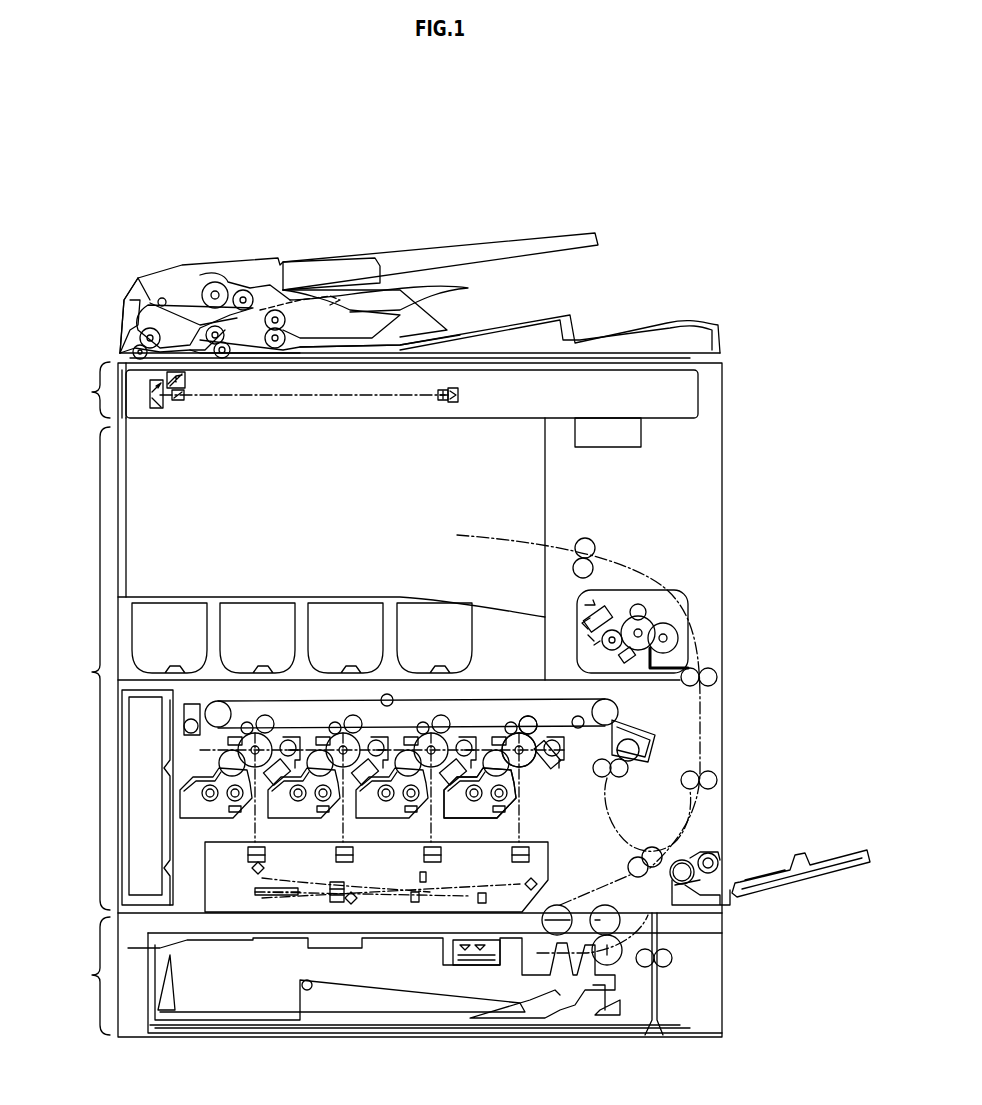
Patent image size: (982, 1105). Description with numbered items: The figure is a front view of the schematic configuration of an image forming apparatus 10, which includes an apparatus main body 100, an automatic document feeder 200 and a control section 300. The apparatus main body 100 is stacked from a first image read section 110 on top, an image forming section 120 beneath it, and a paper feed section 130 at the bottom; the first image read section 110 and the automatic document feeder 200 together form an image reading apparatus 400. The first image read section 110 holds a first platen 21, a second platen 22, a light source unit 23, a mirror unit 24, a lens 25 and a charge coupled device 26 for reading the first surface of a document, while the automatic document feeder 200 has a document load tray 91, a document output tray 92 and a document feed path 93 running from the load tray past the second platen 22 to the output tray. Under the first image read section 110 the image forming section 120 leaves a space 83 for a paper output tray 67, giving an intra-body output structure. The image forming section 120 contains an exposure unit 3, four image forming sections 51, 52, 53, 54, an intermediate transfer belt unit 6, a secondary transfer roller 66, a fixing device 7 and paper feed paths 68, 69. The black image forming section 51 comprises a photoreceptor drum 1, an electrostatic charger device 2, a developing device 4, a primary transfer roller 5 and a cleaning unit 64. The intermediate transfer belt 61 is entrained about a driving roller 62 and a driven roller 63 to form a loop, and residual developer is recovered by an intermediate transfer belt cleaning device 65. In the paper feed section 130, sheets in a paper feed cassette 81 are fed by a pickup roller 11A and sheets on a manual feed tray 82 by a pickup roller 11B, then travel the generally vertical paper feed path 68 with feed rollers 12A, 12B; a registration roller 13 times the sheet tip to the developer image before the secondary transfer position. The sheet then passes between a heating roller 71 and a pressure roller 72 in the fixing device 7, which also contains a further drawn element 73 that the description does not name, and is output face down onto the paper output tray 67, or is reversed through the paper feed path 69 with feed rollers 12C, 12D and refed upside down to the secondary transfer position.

The photoreceptor drum 1 is at (514, 748).
The electrostatic charger device 2 is at (548, 780).
The exposure unit 3 is at (550, 862).
The developing device 4 is at (487, 822).
The primary transfer roller 5 is at (532, 724).
The intermediate transfer belt unit 6 is at (497, 700).
The fixing device 7 is at (690, 608).
The image forming apparatus 10 is at (708, 184).
The pickup roller 11A is at (560, 912).
The pickup roller 11B is at (733, 866).
The feed roller 12A is at (662, 858).
The feed roller 12B is at (587, 538).
The feed roller 12C is at (718, 677).
The feed roller 12D is at (718, 780).
The registration roller 13 is at (629, 769).
The first platen 21 is at (535, 368).
The second platen 22 is at (186, 374).
The light source unit 23 is at (178, 402).
The mirror unit 24 is at (157, 410).
The lens 25 is at (437, 397).
The charge coupled device 26 is at (451, 404).
The black image forming section 51 is at (498, 733).
The image forming section 52 is at (417, 724).
The image forming section 53 is at (327, 724).
The image forming section 54 is at (270, 723).
The intermediate transfer belt 61 is at (517, 726).
The driving roller 62 is at (612, 714).
The driven roller 63 is at (220, 710).
The cleaning unit 64 is at (558, 762).
The intermediate transfer belt cleaning device 65 is at (193, 705).
The secondary transfer roller 66 is at (636, 750).
The paper output tray 67 is at (337, 597).
The paper feed path 68 is at (612, 822).
The paper feed path 69 is at (702, 730).
The heating roller 71 is at (642, 628).
The pressure roller 72 is at (668, 638).
The heater 73 is at (600, 612).
The paper feed cassette 81 is at (597, 1015).
The manual feed tray 82 is at (812, 850).
The space 83 is at (254, 518).
The document load tray 91 is at (440, 255).
The document output tray 92 is at (553, 316).
The document feed path 93 is at (134, 315).
The apparatus main body 100 is at (97, 363).
The first image read section 110 is at (77, 390).
The image forming section 120 is at (81, 668).
The paper feed section 130 is at (82, 976).
The automatic document feeder 200 is at (242, 259).
The control section 300 is at (638, 430).
The image reading apparatus 400 is at (119, 297).